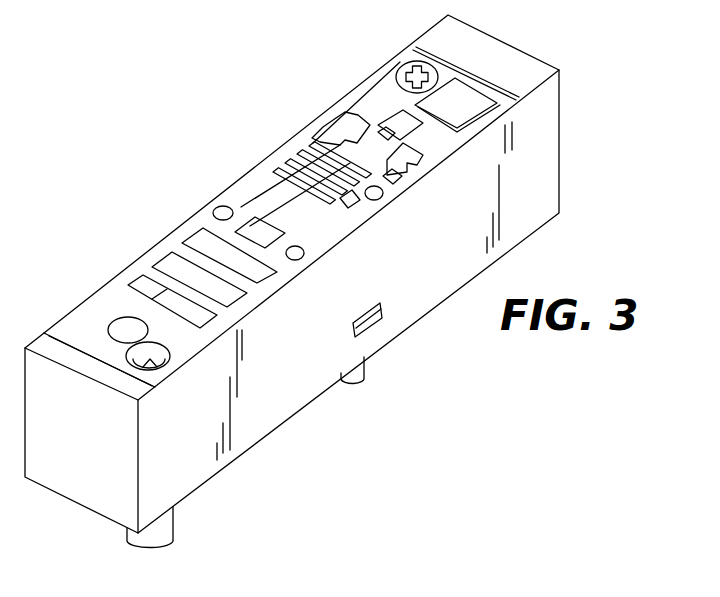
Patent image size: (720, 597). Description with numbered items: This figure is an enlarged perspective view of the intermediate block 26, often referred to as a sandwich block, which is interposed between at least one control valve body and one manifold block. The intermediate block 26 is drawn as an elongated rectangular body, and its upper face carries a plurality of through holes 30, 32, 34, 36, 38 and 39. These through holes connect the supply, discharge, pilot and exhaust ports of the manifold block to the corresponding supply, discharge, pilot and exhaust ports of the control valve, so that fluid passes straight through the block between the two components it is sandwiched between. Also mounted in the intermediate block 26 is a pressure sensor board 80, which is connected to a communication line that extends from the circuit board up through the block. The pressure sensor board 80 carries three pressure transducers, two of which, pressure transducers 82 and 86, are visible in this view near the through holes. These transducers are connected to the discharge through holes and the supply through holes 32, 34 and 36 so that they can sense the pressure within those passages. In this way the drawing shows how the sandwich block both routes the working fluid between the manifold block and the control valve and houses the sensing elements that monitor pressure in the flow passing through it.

The intermediate block 26 is at (410, 300).
The through hole 30 is at (167, 270).
The through hole 32 is at (193, 223).
The through hole 34 is at (253, 225).
The through hole 36 is at (318, 225).
The through hole 38 is at (357, 203).
The through hole 39 is at (390, 180).
The pressure sensor board 80 is at (382, 100).
The pressure transducer 82 is at (345, 127).
The pressure transducer 86 is at (412, 160).